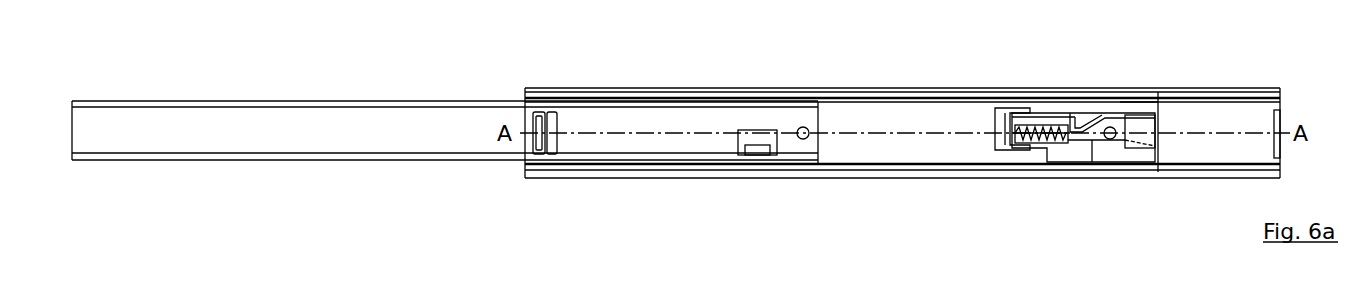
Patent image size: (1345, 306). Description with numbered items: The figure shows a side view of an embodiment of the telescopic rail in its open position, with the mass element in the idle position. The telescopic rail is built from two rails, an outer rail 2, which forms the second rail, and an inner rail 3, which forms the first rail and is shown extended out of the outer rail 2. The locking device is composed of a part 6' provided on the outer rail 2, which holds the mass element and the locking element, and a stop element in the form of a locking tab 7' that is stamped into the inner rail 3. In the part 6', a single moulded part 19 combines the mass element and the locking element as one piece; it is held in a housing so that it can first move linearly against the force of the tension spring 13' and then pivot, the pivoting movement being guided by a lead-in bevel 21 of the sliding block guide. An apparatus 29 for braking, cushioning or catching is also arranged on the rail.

The inner rail 3 is at (252, 132).
The outer rail 2 is at (975, 147).
The part provided on the outer rail 6' is at (902, 235).
The locking tab 7' is at (757, 206).
The apparatus for braking, cushioning or catching 29 is at (808, 127).
The lead-in bevel 21 is at (1090, 120).
The spring 13' is at (1071, 91).
The mass element 19 is at (1090, 140).